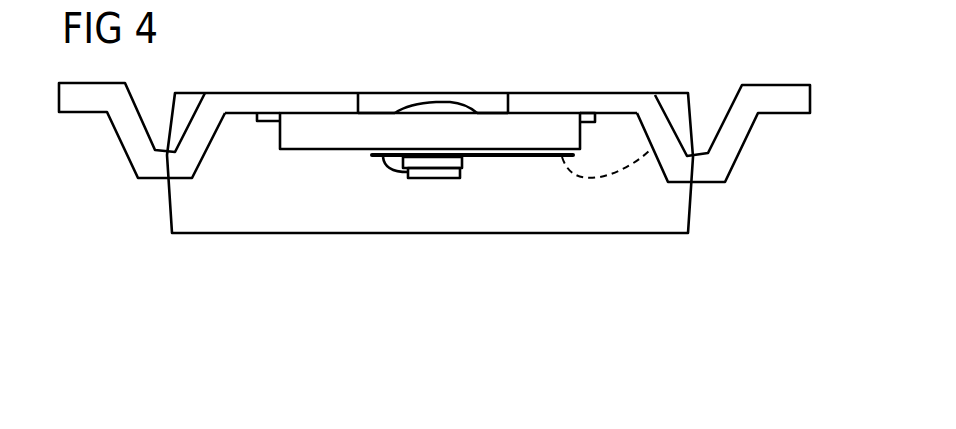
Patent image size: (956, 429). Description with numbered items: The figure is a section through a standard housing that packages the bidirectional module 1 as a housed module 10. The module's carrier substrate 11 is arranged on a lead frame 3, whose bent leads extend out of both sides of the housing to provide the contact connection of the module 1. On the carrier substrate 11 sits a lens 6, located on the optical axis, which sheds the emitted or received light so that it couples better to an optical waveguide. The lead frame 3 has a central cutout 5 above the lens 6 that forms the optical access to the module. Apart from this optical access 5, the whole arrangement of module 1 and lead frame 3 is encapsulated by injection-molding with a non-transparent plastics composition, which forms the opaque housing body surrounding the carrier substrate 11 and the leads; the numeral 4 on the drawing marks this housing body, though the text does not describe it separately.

The bidirectional module 1 is at (370, 172).
The lead frame 3 is at (90, 103).
The housing body 4 is at (463, 220).
The central cutout 5 is at (492, 102).
The lens 6 is at (438, 118).
The housed module 10 is at (647, 265).
The carrier substrate 11 is at (318, 127).